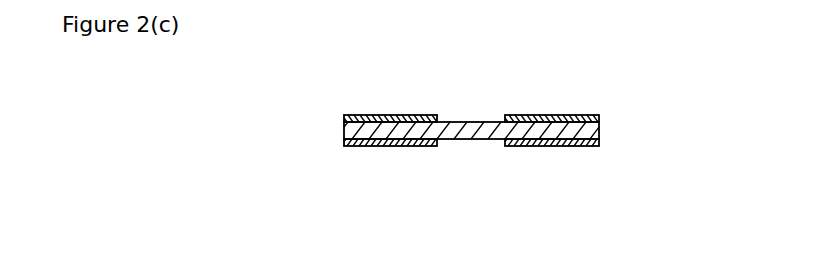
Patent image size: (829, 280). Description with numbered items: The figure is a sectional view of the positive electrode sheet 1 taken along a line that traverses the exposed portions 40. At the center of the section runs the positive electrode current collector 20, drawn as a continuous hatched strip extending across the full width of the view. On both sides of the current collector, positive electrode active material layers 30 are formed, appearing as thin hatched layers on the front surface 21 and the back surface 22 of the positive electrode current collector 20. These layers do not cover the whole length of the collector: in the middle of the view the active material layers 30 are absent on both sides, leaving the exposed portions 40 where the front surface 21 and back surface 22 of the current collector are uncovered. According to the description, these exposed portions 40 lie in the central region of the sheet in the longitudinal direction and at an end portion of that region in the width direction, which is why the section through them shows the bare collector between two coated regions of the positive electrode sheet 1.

The positive electrode sheet 1 is at (608, 100).
The positive electrode current collector 20 is at (412, 115).
The front surface 21 is at (578, 115).
The back surface 22 is at (557, 146).
The positive electrode active material layers 30 is at (372, 115).
The exposed portions 40 is at (481, 122).